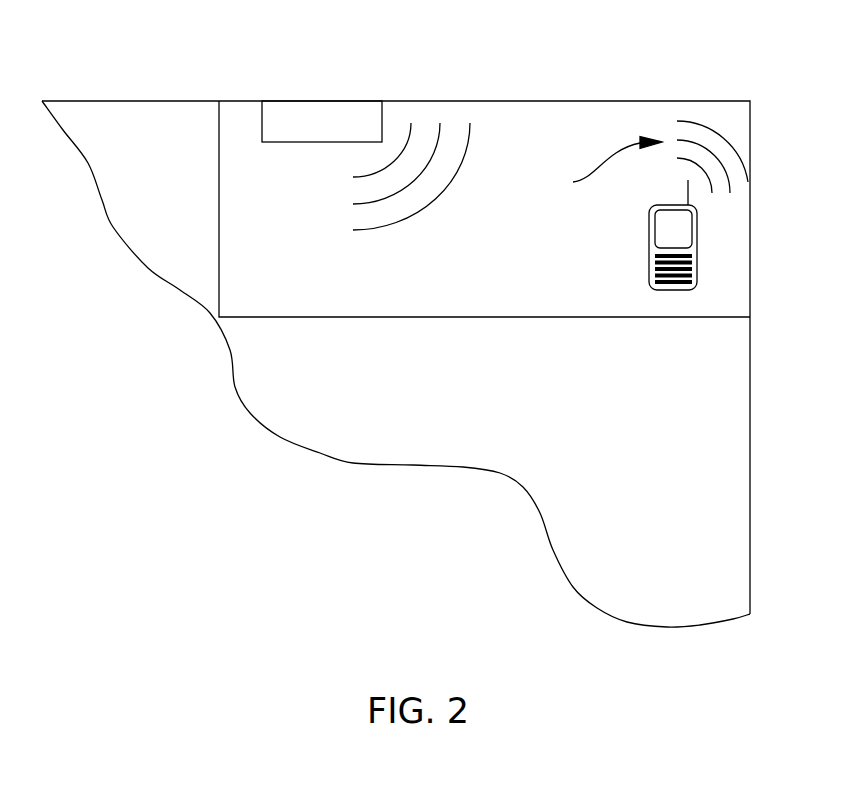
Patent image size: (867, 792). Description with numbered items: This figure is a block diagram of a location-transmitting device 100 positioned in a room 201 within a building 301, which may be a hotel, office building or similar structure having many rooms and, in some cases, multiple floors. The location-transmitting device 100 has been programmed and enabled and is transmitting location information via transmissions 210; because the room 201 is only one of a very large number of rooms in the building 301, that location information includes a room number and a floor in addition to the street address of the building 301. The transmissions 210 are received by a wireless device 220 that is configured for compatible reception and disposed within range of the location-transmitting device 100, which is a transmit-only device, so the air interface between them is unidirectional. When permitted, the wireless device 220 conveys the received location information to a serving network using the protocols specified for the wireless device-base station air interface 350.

The location-transmitting device 100 is at (344, 132).
The room 201 is at (515, 101).
The transmissions 210 is at (397, 222).
The wireless device 220 is at (650, 254).
The building 301 is at (397, 466).
The wireless device-base station air interface 350 is at (593, 168).